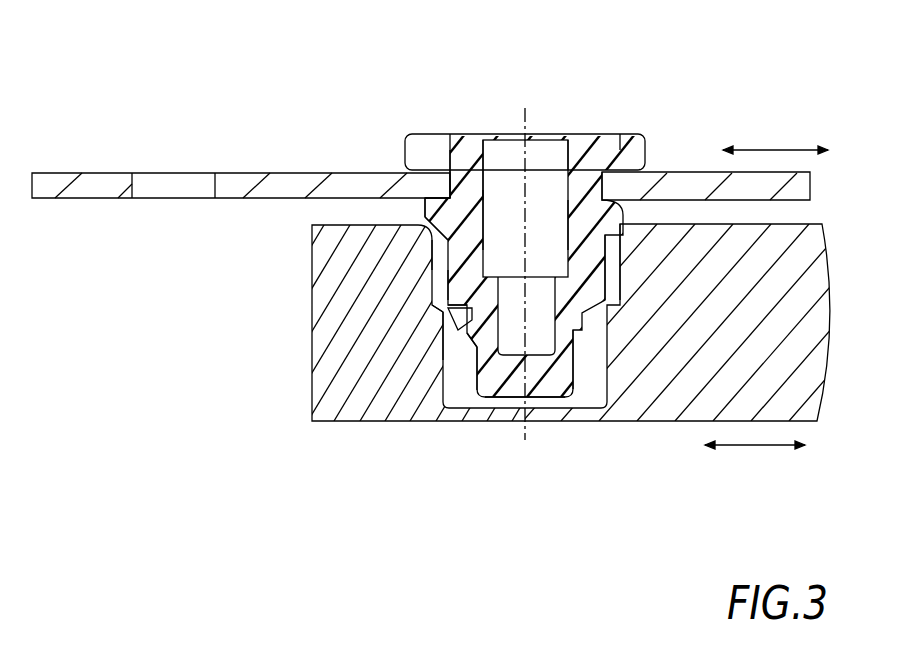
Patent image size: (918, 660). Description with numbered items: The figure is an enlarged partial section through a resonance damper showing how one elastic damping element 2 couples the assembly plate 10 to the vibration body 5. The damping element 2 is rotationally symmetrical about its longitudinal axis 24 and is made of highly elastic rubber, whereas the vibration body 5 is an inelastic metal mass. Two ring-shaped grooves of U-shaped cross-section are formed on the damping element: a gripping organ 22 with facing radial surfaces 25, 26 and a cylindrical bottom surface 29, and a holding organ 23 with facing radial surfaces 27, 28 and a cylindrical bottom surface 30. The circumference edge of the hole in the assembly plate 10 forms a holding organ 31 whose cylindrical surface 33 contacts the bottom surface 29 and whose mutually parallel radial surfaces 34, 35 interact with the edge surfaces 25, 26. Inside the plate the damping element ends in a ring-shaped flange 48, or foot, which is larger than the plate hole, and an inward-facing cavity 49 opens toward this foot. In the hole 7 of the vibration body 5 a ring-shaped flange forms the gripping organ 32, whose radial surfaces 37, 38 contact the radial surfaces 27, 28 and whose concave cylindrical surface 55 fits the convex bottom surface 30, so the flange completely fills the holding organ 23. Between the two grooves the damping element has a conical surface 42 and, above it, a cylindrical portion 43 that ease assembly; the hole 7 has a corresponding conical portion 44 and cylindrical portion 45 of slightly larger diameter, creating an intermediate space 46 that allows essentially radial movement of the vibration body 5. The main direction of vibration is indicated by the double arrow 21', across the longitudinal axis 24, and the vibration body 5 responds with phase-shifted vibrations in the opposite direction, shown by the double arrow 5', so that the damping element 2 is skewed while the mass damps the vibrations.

The elastic damping element 2 is at (612, 188).
The vibration body 5 is at (551, 337).
The direction of vibration of the vibration body 5' is at (755, 482).
The recess (hole) in the vibration body 7 is at (596, 387).
The assembly plate (fastening plate) 10 is at (288, 150).
The main direction of vibration 21' is at (775, 131).
The gripping organ (first holding organ) 22 is at (462, 158).
The holding organ (second fastening organ) 23 is at (478, 338).
The longitudinal axis (axis of symmetry) 24 is at (520, 455).
The radial surface of gripping organ 25 is at (438, 186).
The radial surface of gripping organ 26 is at (423, 190).
The radial surface of holding organ 27 is at (445, 324).
The radial surface of holding organ 28 is at (445, 318).
The bottom surface of first groove 29 is at (440, 172).
The bottom surface of second groove 30 is at (508, 340).
The holding organ of fastening plate 31 is at (700, 170).
The gripping organ (flange) of vibration body 32 is at (425, 343).
The cylindrical surface of fastening plate edge 33 is at (486, 190).
The radial surface of fastening plate edge 34 is at (428, 170).
The radial surface of fastening plate edge 35 is at (560, 226).
The radial surface of vibration body flange 37 is at (463, 347).
The radial surface of vibration body flange 38 is at (457, 308).
The conical surface 42 is at (445, 240).
The cylindrical portion 43 is at (443, 288).
The conical portion of hole 44 is at (625, 215).
The cylindrical portion of hole 45 is at (620, 240).
The intermediate space 46 is at (443, 266).
The ring-shaped flange (foot) 48 is at (657, 135).
The cavity 49 is at (565, 160).
The concave cylindrical surface of flange 55 is at (500, 372).